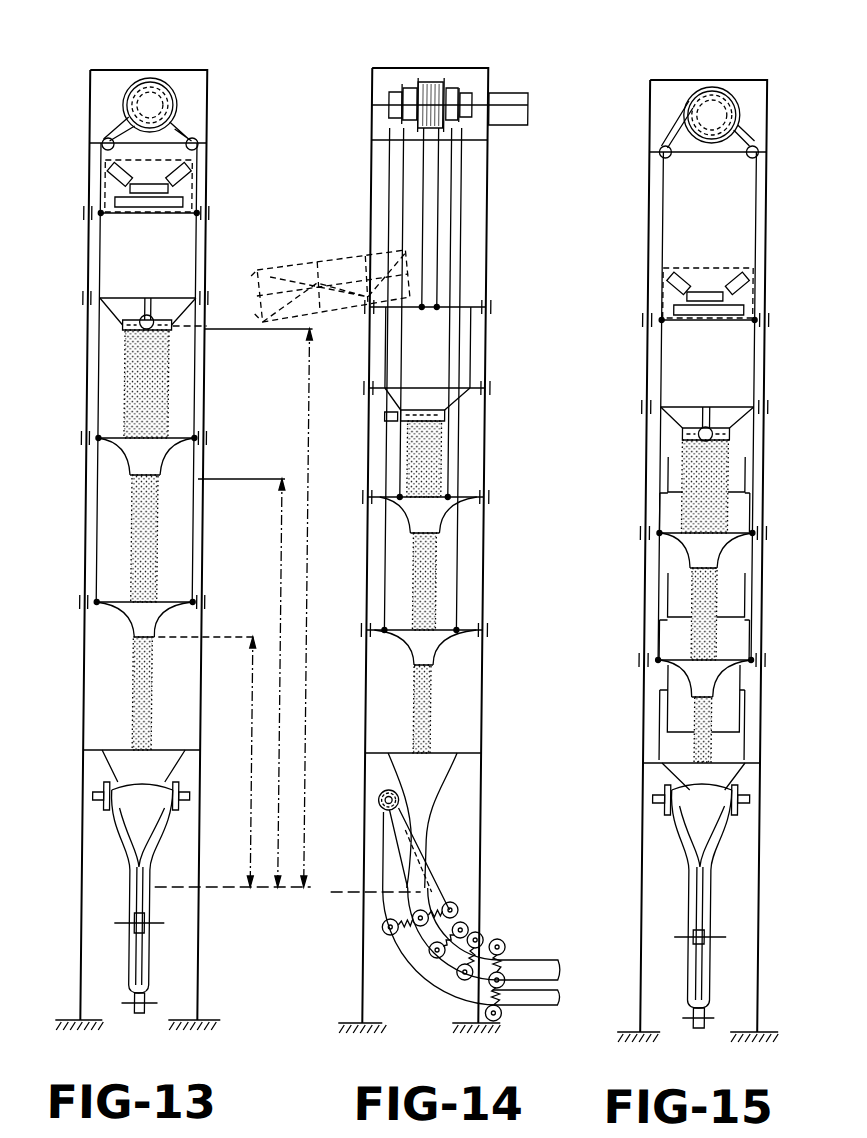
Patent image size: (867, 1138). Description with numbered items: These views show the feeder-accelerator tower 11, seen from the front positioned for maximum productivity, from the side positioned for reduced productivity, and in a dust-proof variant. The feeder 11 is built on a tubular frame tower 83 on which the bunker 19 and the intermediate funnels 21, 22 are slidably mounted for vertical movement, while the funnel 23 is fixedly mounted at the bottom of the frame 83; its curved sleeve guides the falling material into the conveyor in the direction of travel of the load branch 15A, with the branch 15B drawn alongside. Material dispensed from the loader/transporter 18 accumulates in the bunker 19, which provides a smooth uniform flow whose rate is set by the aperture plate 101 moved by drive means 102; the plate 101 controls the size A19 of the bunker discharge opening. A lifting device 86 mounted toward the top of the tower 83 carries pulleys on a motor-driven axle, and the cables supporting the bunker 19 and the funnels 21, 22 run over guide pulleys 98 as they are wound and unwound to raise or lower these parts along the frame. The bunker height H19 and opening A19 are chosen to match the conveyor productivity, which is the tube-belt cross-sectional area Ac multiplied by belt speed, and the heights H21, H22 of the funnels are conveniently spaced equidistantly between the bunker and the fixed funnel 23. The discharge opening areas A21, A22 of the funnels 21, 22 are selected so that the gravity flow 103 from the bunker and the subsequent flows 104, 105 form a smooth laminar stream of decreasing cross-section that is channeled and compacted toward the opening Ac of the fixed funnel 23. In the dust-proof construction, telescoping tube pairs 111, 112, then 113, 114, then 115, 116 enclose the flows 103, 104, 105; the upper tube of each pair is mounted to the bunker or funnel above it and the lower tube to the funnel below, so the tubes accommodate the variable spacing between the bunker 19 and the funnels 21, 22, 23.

In FIG. 14, the feeder-accelerator tower 11 is at (488, 59).
In FIG. 14, the load branch 15A is at (556, 967).
In FIG. 14, the discharge conduit 15B is at (558, 1003).
In FIG. 14, the loader/transporter 18 is at (348, 259).
In FIG. 13, the bunker 19 is at (190, 244).
In FIG. 14, the bunker 19 is at (479, 354).
In FIG. 13, the intermediate funnel 21 is at (168, 465).
In FIG. 14, the intermediate funnel 21 is at (450, 521).
In FIG. 13, the intermediate funnel 22 is at (167, 627).
In FIG. 14, the intermediate funnel 22 is at (447, 655).
In FIG. 13, the fixed funnel 23 is at (171, 765).
In FIG. 14, the fixed funnel 23 is at (438, 784).
In FIG. 13, the tubular frame tower 83 is at (91, 235).
In FIG. 14, the tubular frame tower 83 is at (492, 236).
In FIG. 13, the lifting device 86 is at (159, 76).
In FIG. 14, the lifting device 86 is at (427, 79).
In FIG. 13, the guide pulleys 98 is at (105, 138).
In FIG. 13, the aperture plate 101 is at (136, 327).
In FIG. 13, the drive means 102 is at (171, 344).
In FIG. 13, the gravity induced flow 103 is at (132, 393).
In FIG. 15, the gravity induced flow 103 is at (695, 493).
In FIG. 13, the material flow 104 is at (138, 518).
In FIG. 15, the material flow 104 is at (703, 594).
In FIG. 13, the material flow 105 is at (140, 672).
In FIG. 15, the material flow 105 is at (702, 717).
In FIG. 15, the upper telescoping tube 111 is at (752, 442).
In FIG. 15, the lower telescoping tube 112 is at (757, 503).
In FIG. 15, the upper telescoping tube 113 is at (749, 564).
In FIG. 15, the lower telescoping tube 114 is at (754, 618).
In FIG. 15, the upper telescoping tube 115 is at (750, 684).
In FIG. 15, the lower telescoping tube 116 is at (752, 741).
In FIG. 13, the bunker discharge opening area A19 is at (144, 333).
In FIG. 13, the funnel discharge opening area A21 is at (143, 478).
In FIG. 13, the funnel discharge opening area A22 is at (141, 640).
In FIG. 13, the bunker height H19 is at (266, 608).
In FIG. 13, the drop height from hopper 21 H21 is at (282, 683).
In FIG. 13, the drop height from hopper 22 H22 is at (255, 762).
In FIG. 14, the conveyor cross-sectional area Ac is at (450, 893).